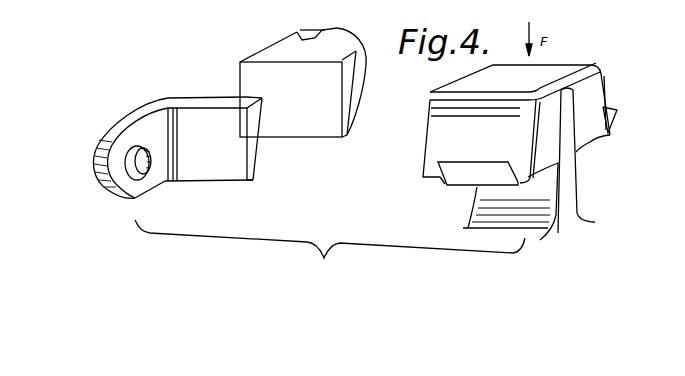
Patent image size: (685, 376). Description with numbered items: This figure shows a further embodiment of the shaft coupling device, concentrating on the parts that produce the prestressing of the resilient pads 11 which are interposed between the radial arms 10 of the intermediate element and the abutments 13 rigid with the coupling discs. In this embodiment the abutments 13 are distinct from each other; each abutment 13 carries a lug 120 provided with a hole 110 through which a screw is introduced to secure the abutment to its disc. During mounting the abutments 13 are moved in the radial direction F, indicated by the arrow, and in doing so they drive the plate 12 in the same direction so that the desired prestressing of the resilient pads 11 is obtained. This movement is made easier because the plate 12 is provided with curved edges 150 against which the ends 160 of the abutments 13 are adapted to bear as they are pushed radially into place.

The radial arm 10 is at (565, 198).
The resilient pad 11 is at (586, 98).
The plate 12 is at (545, 78).
The abutment 13 is at (345, 129).
The hole 110 is at (132, 177).
The lug 120 is at (100, 163).
The curved edge 150 is at (475, 175).
The end of abutment 160 is at (345, 135).